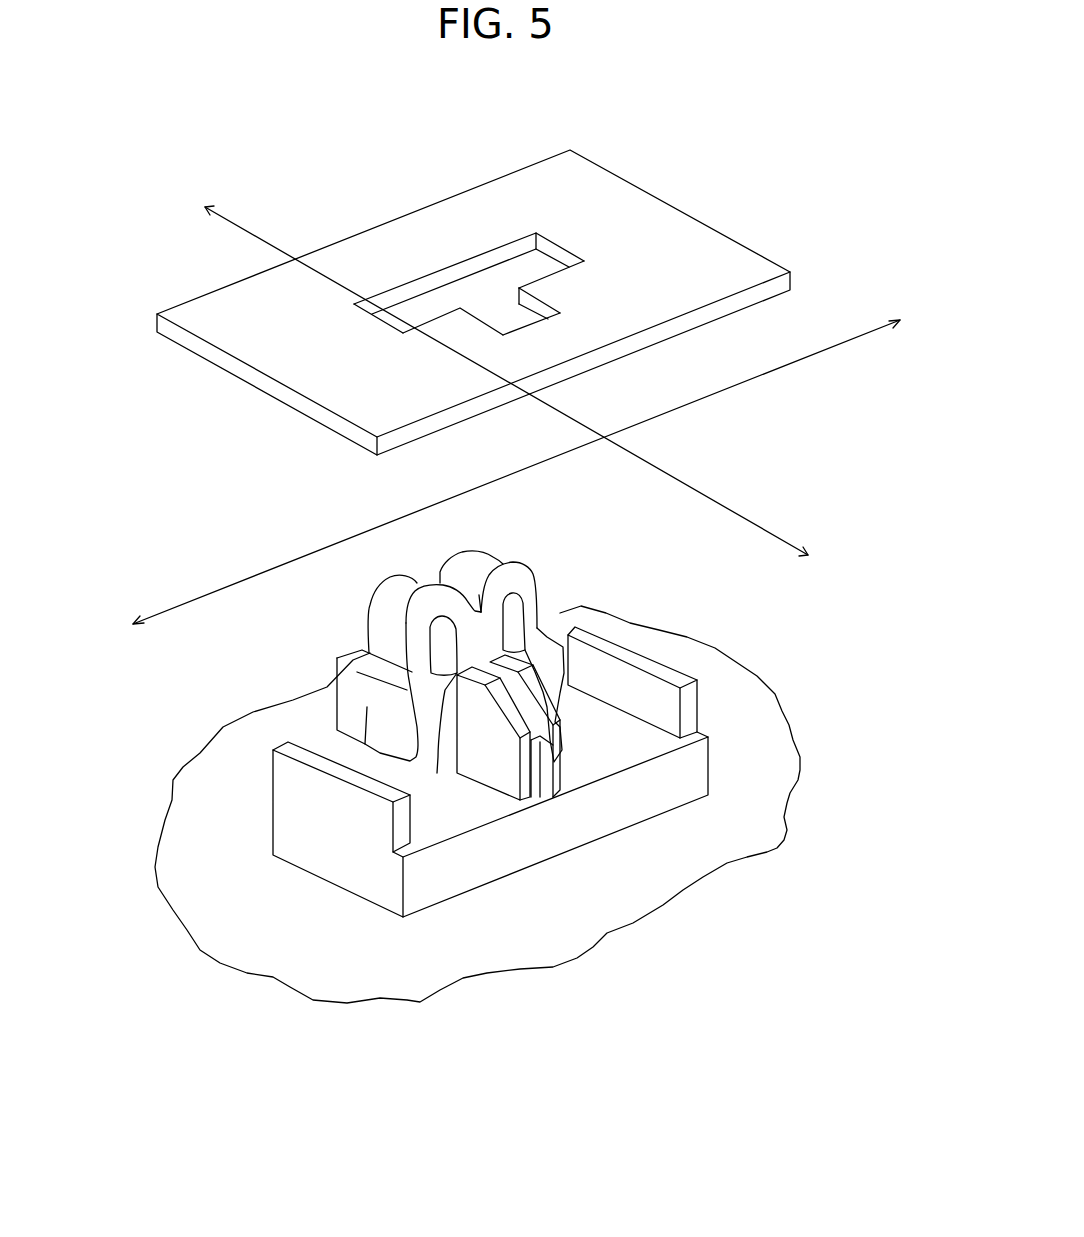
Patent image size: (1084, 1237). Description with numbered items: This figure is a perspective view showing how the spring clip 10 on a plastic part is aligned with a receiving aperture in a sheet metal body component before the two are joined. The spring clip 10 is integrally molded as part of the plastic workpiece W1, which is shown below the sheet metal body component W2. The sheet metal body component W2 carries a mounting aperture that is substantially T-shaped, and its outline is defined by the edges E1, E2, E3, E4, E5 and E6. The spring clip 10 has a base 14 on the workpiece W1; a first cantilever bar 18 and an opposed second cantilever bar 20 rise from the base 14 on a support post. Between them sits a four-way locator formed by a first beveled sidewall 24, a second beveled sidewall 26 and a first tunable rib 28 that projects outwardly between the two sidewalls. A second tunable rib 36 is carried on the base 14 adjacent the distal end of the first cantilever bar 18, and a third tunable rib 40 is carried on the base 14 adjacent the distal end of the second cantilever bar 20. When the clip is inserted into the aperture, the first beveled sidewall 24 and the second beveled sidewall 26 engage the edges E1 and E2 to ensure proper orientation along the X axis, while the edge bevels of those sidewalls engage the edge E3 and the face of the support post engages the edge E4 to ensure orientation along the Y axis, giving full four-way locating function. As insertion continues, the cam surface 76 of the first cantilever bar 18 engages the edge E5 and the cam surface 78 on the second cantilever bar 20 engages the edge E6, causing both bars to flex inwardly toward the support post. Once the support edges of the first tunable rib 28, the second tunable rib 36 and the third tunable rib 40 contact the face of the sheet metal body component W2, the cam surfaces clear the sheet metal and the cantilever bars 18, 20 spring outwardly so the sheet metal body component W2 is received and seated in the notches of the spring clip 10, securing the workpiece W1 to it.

The spring clip 10 is at (473, 634).
The base 14 is at (440, 882).
The first cantilever bar 18 is at (385, 632).
The second cantilever bar 20 is at (428, 585).
The first beveled sidewall 24 is at (497, 757).
The second beveled sidewall 26 is at (563, 742).
The first tunable rib 28 is at (550, 766).
The second tunable rib 36 is at (298, 780).
The third tunable rib 40 is at (696, 701).
The cam surface 76 is at (353, 710).
The cam surface 78 is at (585, 655).
The workpiece W1 is at (587, 940).
The sheet metal body component W2 is at (712, 243).
The edge E1 is at (533, 305).
The edge E2 is at (483, 323).
The edge E3 is at (522, 327).
The edge E4 is at (447, 273).
The edge E5 is at (387, 322).
The edge E6 is at (558, 250).
The X axis X is at (822, 353).
The Y axis Y is at (243, 222).